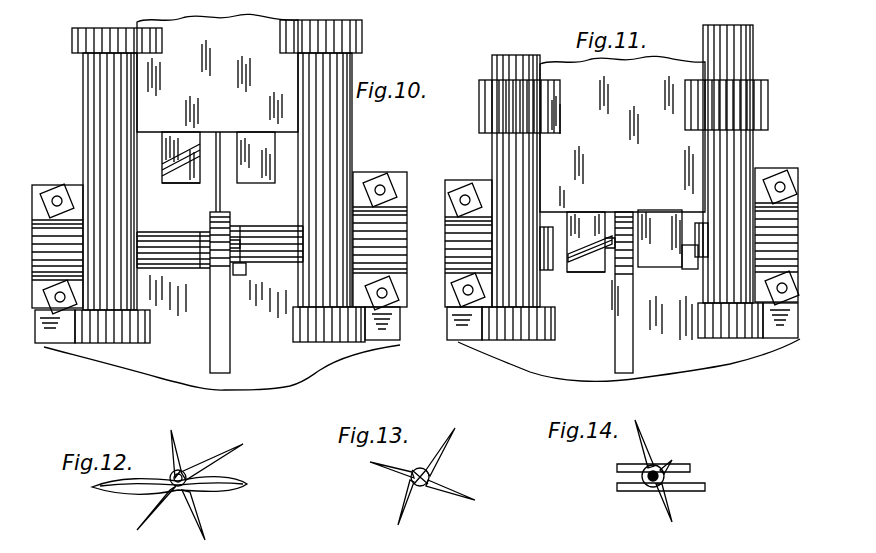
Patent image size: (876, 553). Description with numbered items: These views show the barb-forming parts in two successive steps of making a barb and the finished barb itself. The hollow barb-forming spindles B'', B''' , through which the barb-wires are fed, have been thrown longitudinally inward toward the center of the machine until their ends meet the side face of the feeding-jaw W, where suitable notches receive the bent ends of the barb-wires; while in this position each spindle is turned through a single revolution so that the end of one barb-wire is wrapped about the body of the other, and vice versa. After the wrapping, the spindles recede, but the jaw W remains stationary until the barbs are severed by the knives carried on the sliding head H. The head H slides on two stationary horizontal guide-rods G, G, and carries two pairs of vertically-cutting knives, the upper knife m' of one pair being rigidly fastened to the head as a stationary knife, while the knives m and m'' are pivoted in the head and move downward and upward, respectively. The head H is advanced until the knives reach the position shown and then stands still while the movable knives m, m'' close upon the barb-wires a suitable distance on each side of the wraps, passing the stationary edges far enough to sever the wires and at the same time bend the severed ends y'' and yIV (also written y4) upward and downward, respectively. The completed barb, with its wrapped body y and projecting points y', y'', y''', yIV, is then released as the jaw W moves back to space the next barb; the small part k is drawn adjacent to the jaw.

In FIG. 10, the sliding head H is at (217, 73).
In FIG. 11, the sliding head H is at (622, 134).
In FIG. 10, the guide-rods G is at (96, 130).
In FIG. 11, the guide-rods G is at (512, 158).
In FIG. 10, the knife m is at (256, 157).
In FIG. 11, the knife m is at (660, 238).
In FIG. 10, the upper knife m' is at (181, 157).
In FIG. 11, the upper knife m' is at (586, 241).
In FIG. 10, the knife m'' is at (181, 191).
In FIG. 11, the knife m'' is at (586, 261).
In FIG. 10, the cutter spider y is at (229, 172).
In FIG. 12, the cutter spider y is at (169, 486).
In FIG. 13, the cutter spider y is at (420, 477).
In FIG. 14, the cutter spider y is at (651, 478).
In FIG. 12, the cutter arm y' is at (148, 510).
In FIG. 13, the cutter arm y' is at (397, 503).
In FIG. 14, the cutter arm y' is at (673, 506).
In FIG. 10, the severed end y'' is at (247, 227).
In FIG. 11, the severed end y'' is at (581, 252).
In FIG. 12, the severed end y'' is at (205, 518).
In FIG. 13, the severed end y'' is at (381, 467).
In FIG. 14, the severed end y'' is at (674, 458).
In FIG. 12, the cutter arm y''' is at (222, 455).
In FIG. 13, the cutter arm y''' is at (454, 450).
In FIG. 14, the cutter arm y''' is at (649, 439).
In FIG. 12, the severed end yIV is at (186, 451).
In FIG. 13, the severed end yIV is at (460, 495).
In FIG. 11, the severed end y4 is at (689, 256).
In FIG. 10, the barb-forming spindle B'' is at (173, 238).
In FIG. 11, the barb-forming spindle B'' is at (552, 239).
In FIG. 10, the barb-forming spindle B''' is at (266, 232).
In FIG. 11, the barb-forming spindle B''' is at (695, 232).
In FIG. 10, the feeding-jaw W is at (210, 222).
In FIG. 11, the feeding-jaw W is at (633, 340).
In FIG. 10, the key k is at (240, 276).
In FIG. 11, the key k is at (627, 264).